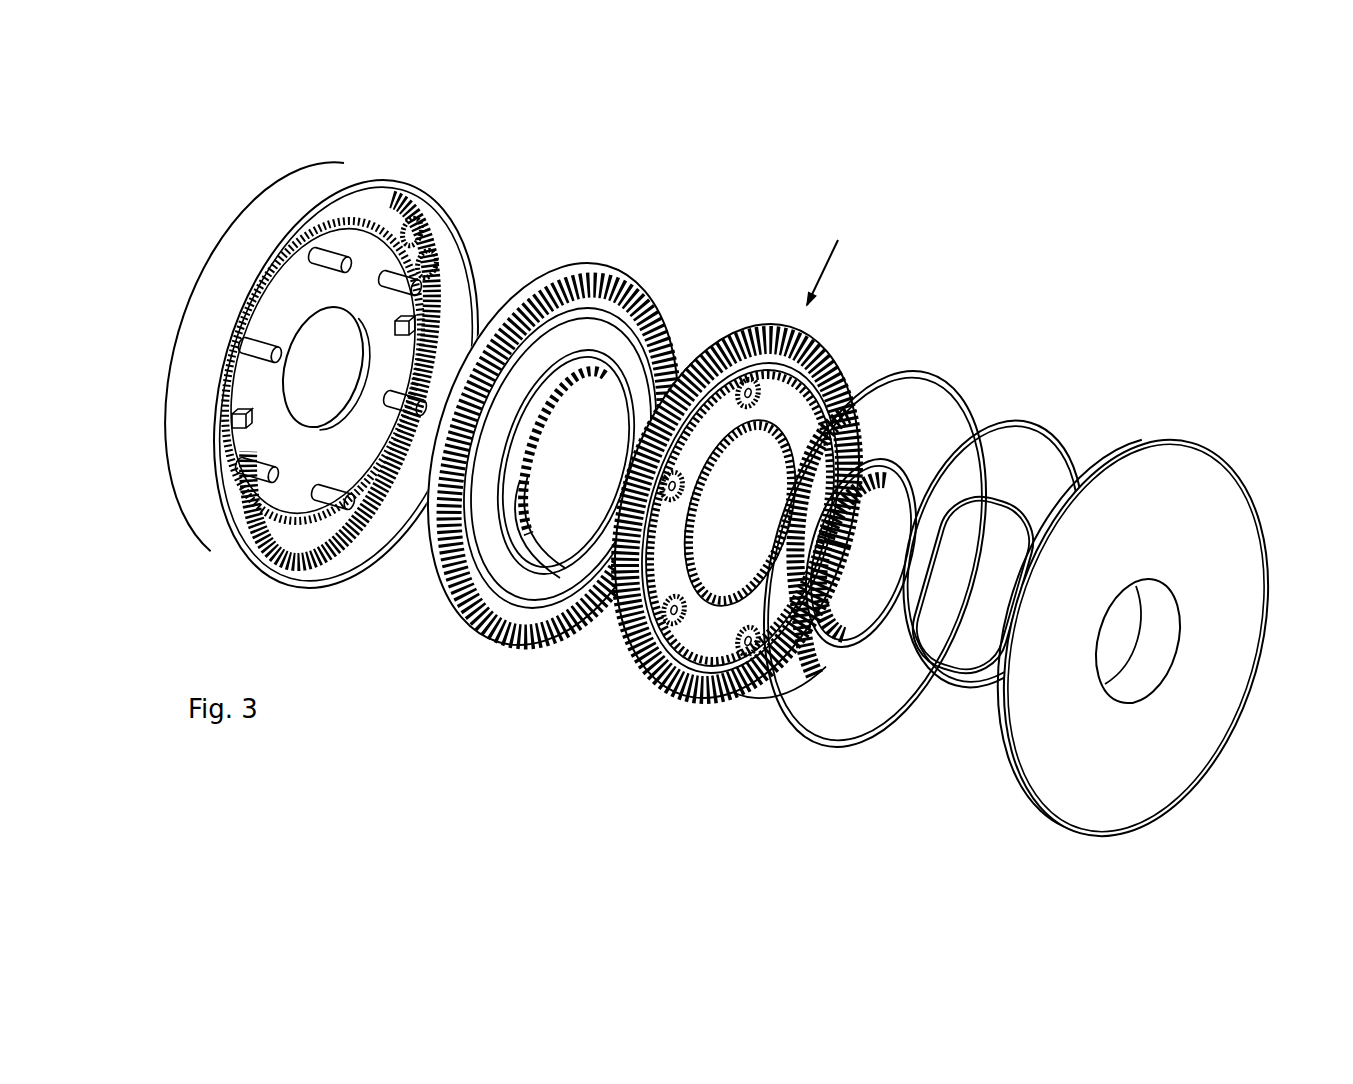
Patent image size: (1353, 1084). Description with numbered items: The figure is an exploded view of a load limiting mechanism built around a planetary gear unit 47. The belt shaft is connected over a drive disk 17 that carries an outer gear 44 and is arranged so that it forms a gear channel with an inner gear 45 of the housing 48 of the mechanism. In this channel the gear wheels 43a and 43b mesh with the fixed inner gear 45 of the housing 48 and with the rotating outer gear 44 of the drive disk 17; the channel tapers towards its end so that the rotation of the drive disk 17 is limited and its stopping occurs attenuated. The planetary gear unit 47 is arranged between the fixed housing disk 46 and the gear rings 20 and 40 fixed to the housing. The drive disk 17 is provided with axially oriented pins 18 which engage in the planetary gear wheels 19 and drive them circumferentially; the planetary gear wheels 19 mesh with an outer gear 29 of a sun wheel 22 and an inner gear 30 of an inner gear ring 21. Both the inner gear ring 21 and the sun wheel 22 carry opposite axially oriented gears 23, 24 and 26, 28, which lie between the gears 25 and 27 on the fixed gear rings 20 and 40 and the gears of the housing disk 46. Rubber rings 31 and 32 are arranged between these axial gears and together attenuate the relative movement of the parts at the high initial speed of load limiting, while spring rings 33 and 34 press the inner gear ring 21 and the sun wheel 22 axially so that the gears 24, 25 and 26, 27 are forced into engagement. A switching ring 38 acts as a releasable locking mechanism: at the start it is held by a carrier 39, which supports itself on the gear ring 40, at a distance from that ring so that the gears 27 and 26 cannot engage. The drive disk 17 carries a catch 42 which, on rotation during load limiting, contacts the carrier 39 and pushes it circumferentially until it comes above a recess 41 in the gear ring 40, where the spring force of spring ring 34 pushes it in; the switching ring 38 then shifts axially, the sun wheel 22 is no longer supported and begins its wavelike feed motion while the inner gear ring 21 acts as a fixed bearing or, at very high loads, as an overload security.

The drive disk 17 is at (505, 262).
The pins 18 is at (440, 203).
The planetary gear wheels 19 is at (818, 332).
The gear ring 20 is at (682, 313).
The inner gear ring 21 is at (617, 643).
The sun wheel 22 is at (703, 700).
The gear 23 is at (670, 690).
The gear 24 is at (723, 337).
The gear 25 is at (633, 272).
The gear 26 is at (770, 455).
The gear 27 is at (558, 397).
The gear 28 is at (760, 693).
The outer gear 29 is at (862, 366).
The inner gear 30 is at (635, 673).
The rubber ring 31 is at (968, 399).
The rubber ring 32 is at (856, 630).
The spring ring 33 is at (1035, 440).
The spring ring 34 is at (965, 690).
The switching ring 38 is at (560, 630).
The carrier 39 is at (480, 610).
The gear ring 40 is at (465, 585).
The recess 41 is at (455, 542).
The catch 42 is at (230, 435).
The gear wheel 43a is at (437, 253).
The gear wheel 43b is at (440, 283).
The outer gear 44 is at (365, 220).
The inner gear 45 is at (395, 215).
The housing disk 46 is at (1085, 788).
The planetary gear unit 47 is at (836, 257).
The housing 48 is at (212, 310).